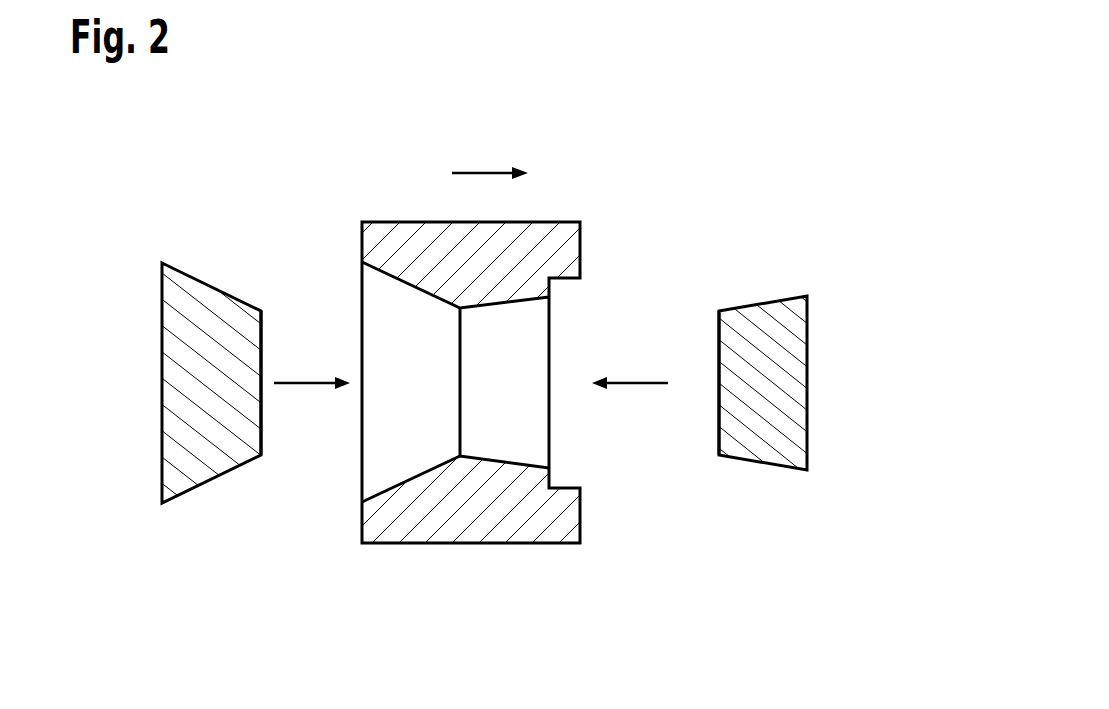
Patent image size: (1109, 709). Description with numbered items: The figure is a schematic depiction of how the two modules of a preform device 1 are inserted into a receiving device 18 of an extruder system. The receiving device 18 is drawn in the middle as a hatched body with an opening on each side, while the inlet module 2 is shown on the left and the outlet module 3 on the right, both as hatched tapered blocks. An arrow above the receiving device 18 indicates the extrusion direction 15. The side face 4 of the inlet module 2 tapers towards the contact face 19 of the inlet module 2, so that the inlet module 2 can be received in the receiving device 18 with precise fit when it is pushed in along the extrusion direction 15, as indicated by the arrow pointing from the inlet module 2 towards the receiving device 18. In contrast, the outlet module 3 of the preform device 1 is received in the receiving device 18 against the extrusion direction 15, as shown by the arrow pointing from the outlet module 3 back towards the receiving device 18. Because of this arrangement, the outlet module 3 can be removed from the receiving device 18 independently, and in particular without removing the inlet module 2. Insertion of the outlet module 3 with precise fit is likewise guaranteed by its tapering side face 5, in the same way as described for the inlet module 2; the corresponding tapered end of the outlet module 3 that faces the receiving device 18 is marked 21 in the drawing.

The preform device 1 is at (677, 149).
The inlet module 2 is at (209, 380).
The outlet module 3 is at (761, 361).
The side face of the inlet module 4 is at (188, 374).
The side face of the outlet module 5 is at (773, 385).
The extrusion direction 15 is at (483, 170).
The receiving device 18 is at (467, 570).
The contact face of the inlet module 19 is at (263, 342).
The contact surface of second component 21 is at (708, 418).